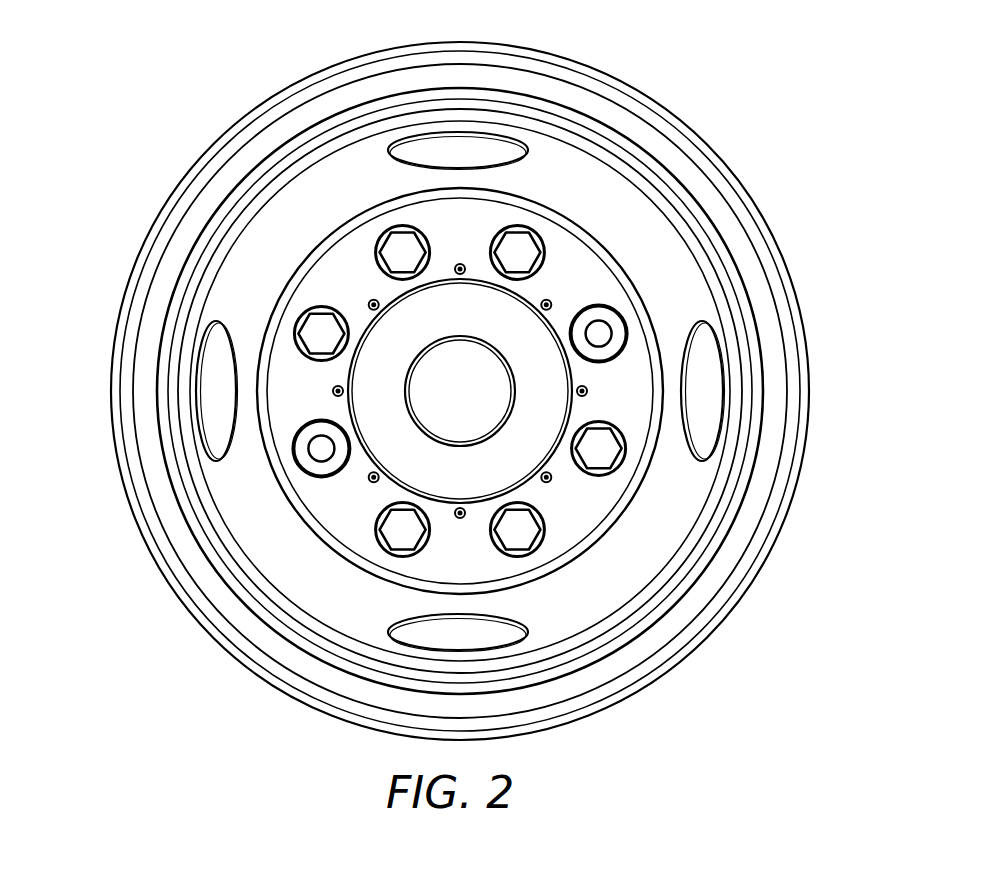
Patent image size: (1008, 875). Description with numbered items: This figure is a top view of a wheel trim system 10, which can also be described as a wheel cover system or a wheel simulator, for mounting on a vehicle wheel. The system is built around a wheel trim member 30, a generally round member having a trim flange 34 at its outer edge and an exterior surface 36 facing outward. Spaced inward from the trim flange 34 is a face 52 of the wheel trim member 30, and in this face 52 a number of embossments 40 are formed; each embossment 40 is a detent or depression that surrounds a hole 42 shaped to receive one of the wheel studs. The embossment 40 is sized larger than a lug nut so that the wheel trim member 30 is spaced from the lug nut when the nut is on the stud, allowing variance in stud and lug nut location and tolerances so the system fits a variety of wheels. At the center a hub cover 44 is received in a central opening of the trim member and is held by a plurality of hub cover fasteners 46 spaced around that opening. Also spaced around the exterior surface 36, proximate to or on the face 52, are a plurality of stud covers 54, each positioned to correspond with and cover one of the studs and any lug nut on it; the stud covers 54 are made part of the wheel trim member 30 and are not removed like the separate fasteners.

The wheel trim system 10 is at (100, 66).
The wheel trim member 30 is at (299, 73).
The trim flange 34 is at (808, 375).
The exterior surface 36 is at (610, 215).
The embossment 40 is at (623, 325).
The hole 42 is at (598, 334).
The hub cover 44 is at (365, 384).
The hub cover fasteners 46 is at (373, 303).
The face 52 is at (577, 502).
The stud covers 54 is at (402, 534).